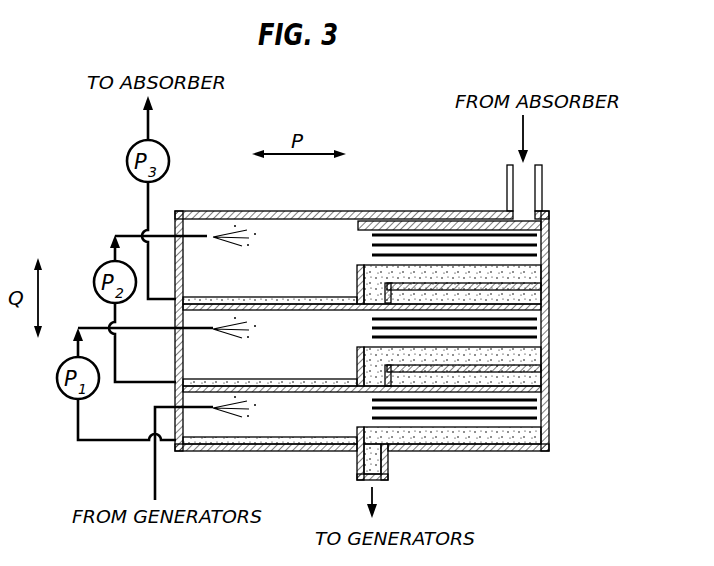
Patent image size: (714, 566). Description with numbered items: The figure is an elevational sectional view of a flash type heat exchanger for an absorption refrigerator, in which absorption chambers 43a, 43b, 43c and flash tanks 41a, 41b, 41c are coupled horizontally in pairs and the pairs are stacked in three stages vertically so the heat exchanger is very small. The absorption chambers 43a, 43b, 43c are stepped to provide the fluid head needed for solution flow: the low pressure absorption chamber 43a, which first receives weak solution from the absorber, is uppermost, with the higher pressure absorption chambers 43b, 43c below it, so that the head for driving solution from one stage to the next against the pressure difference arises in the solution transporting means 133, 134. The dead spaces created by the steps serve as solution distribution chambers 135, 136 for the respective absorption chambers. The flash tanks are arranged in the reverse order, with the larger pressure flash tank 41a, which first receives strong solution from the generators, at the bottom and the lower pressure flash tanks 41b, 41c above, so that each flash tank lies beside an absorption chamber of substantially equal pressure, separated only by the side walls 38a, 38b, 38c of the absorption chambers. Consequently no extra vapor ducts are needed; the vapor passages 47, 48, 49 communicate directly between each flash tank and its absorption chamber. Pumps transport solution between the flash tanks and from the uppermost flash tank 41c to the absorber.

The flash tank 41a is at (277, 422).
The flash tank 41b is at (227, 352).
The flash tank 41c is at (274, 246).
The vapor passage 47 is at (359, 237).
The vapor passage 48 is at (357, 328).
The vapor passage 49 is at (358, 418).
The solution transporting means 133 is at (372, 297).
The solution transporting means 134 is at (370, 379).
The solution distribution chamber 135 is at (547, 290).
The solution distribution chamber 136 is at (547, 371).
The side wall 38a is at (356, 288).
The side wall 38b is at (357, 371).
The side wall 38c is at (354, 430).
The absorption chamber 43a is at (540, 249).
The absorption chamber 43b is at (540, 331).
The absorption chamber 43c is at (540, 409).